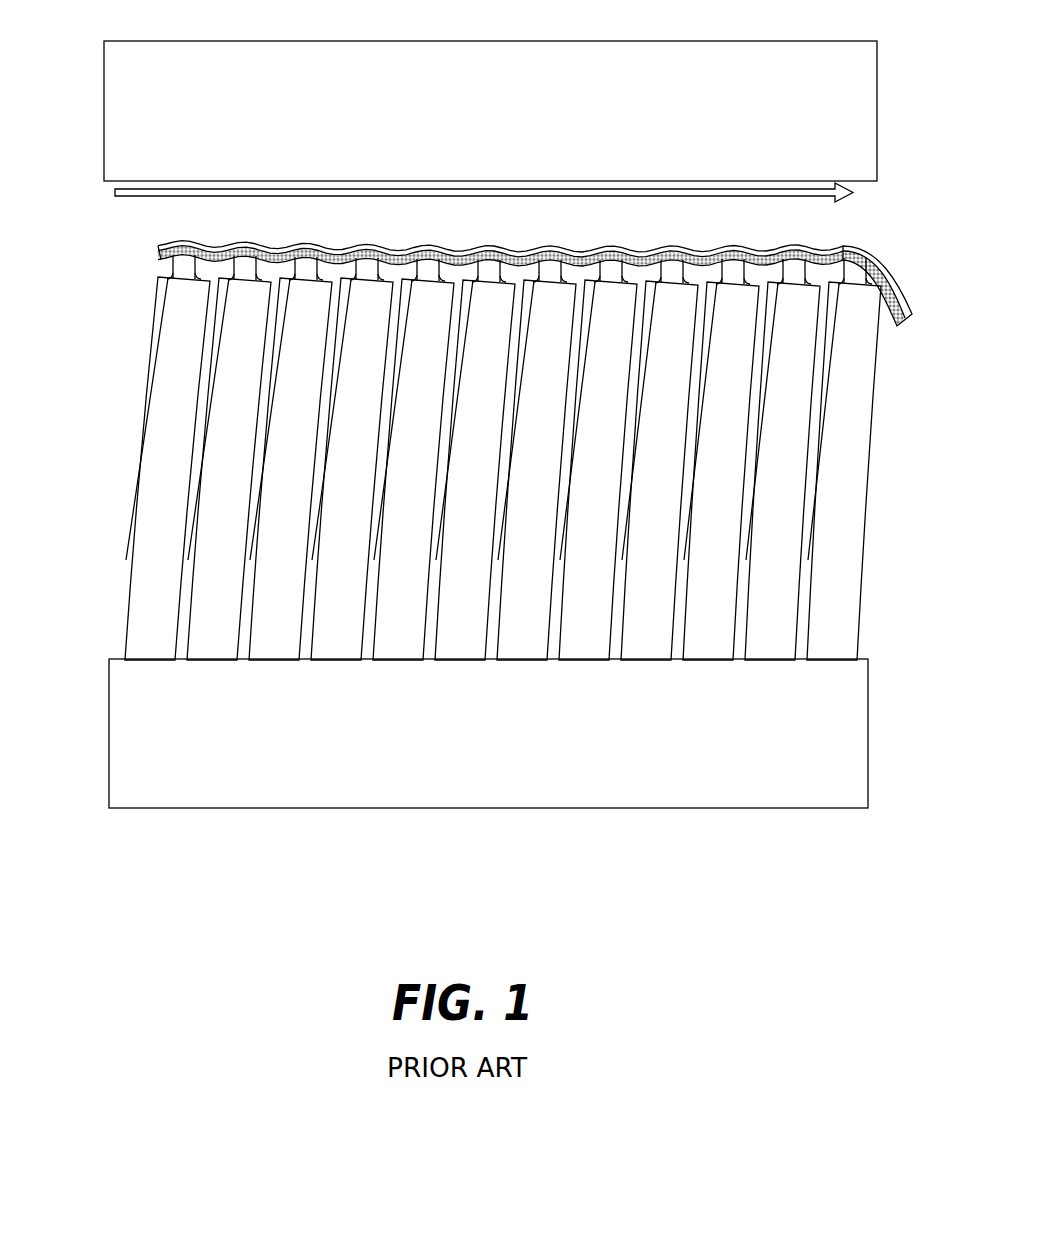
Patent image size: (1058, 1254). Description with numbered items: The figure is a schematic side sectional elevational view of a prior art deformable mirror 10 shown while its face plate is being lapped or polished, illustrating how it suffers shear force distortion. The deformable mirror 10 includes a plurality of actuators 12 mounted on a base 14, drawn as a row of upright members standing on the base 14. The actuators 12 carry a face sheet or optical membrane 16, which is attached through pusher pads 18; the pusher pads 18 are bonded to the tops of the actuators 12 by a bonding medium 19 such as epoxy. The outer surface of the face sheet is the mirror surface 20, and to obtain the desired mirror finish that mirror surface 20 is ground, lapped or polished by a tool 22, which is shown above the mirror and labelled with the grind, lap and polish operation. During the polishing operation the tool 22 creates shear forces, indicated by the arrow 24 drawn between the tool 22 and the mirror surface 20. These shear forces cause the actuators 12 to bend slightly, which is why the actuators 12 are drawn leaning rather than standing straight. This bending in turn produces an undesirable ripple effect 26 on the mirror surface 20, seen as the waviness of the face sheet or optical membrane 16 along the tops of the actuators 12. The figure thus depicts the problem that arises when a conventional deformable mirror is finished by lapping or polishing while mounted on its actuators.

The deformable mirror 10 is at (513, 564).
The actuators 12 is at (780, 480).
The base 14 is at (840, 691).
The face sheet or optical membrane 16 is at (869, 258).
The pusher pads 18 is at (676, 274).
The bonding medium 19 is at (351, 272).
The mirror surface 20 is at (180, 237).
The tool 22 is at (705, 64).
The arrow indicating shear forces 24 is at (130, 192).
The ripple effect 26 is at (424, 253).